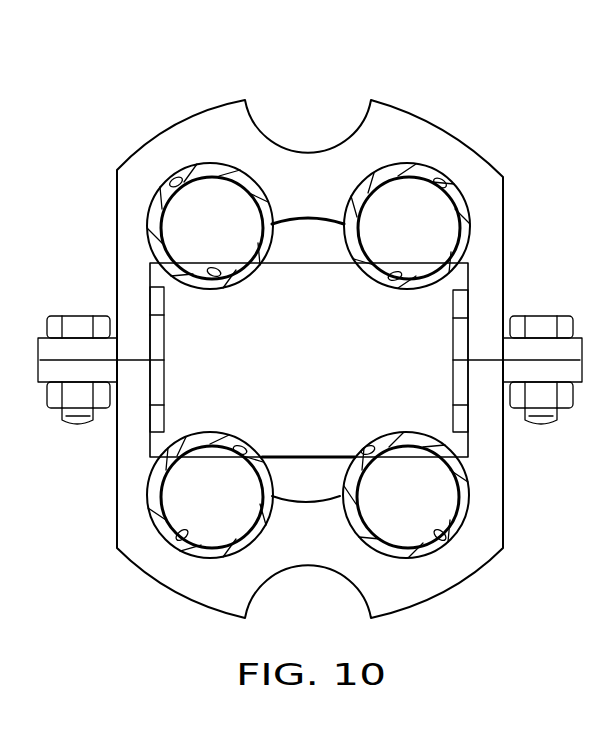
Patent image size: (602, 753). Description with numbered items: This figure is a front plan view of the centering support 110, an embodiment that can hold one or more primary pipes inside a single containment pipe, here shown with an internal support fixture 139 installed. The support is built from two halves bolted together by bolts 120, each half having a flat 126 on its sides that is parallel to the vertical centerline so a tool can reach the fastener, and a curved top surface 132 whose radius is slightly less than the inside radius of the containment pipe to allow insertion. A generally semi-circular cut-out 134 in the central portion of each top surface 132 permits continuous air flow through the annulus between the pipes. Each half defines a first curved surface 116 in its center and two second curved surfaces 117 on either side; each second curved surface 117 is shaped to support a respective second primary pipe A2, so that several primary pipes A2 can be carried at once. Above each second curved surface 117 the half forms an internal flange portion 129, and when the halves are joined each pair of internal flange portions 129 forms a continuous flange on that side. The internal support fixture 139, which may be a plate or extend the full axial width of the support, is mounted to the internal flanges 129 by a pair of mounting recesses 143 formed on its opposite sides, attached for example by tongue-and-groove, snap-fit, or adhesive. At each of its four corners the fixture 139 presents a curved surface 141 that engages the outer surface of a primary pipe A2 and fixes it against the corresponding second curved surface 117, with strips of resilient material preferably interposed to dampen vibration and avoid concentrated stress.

The centering support 110 is at (438, 92).
The first curved surface 116 is at (310, 224).
The second curved surface 117 is at (172, 184).
The bolt 120 is at (72, 316).
The flat 126 is at (117, 215).
The internal flange portion 129 is at (158, 388).
The curved top surface 132 is at (192, 118).
The semi-circular cut-out 134 is at (309, 150).
The internal support fixture 139 is at (330, 378).
The curved surface 141 is at (214, 270).
The mounting recess 143 is at (164, 337).
The second primary pipe A2 is at (364, 184).